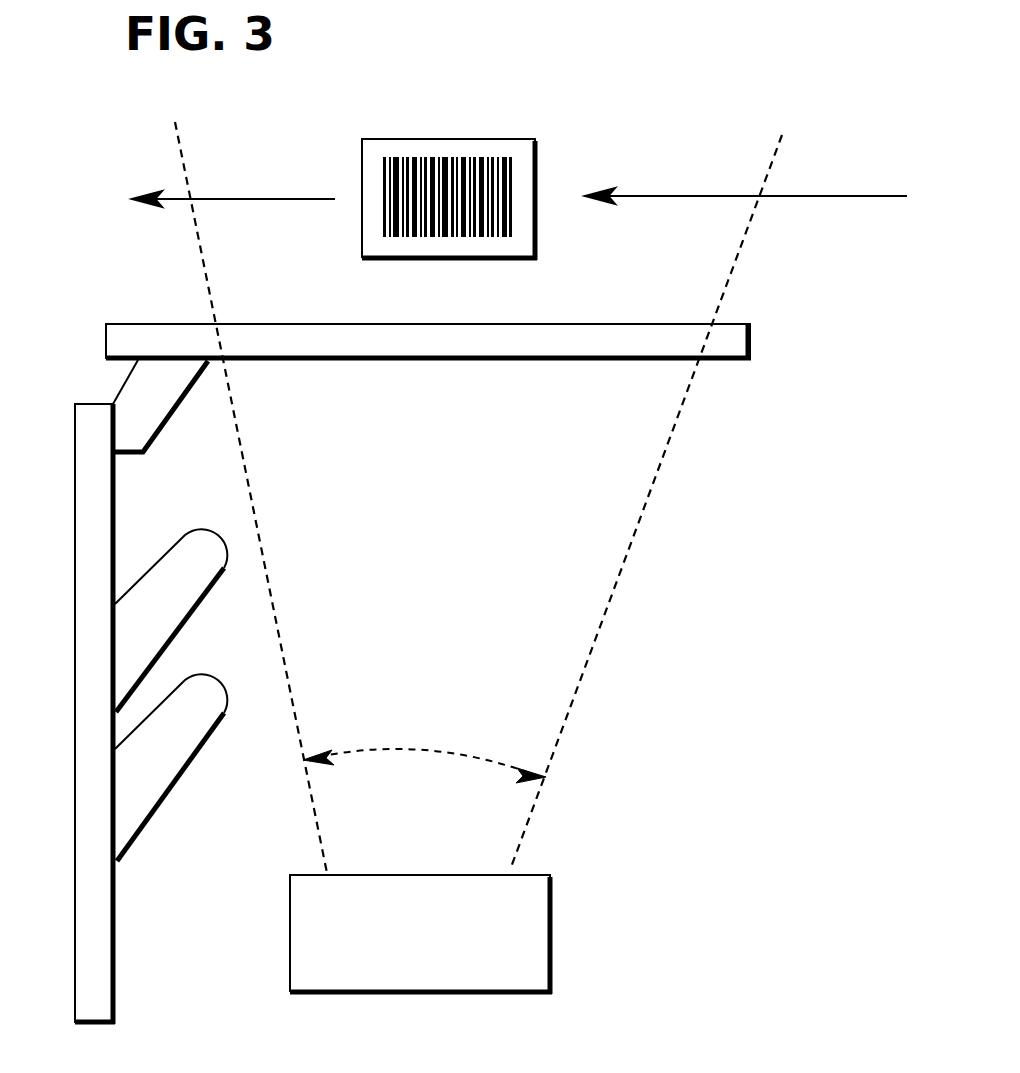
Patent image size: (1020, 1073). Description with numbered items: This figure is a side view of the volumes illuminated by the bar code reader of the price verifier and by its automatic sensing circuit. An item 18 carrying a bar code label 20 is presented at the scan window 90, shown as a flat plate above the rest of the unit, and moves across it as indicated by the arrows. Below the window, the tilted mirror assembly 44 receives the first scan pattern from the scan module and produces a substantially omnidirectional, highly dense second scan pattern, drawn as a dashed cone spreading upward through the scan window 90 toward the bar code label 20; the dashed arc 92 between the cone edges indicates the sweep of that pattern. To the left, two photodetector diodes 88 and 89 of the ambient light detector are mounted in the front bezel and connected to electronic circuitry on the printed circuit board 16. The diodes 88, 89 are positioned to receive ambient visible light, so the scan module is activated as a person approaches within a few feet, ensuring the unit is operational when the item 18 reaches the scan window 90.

The printed circuit board 16 is at (88, 614).
The item 18 is at (535, 140).
The bar code label 20 is at (506, 236).
The tilted mirror assembly 44 is at (552, 875).
The photodetector diode 88 is at (165, 557).
The photodetector diode 89 is at (170, 765).
The scan window 90 is at (433, 353).
The scan sweep 92 is at (435, 752).